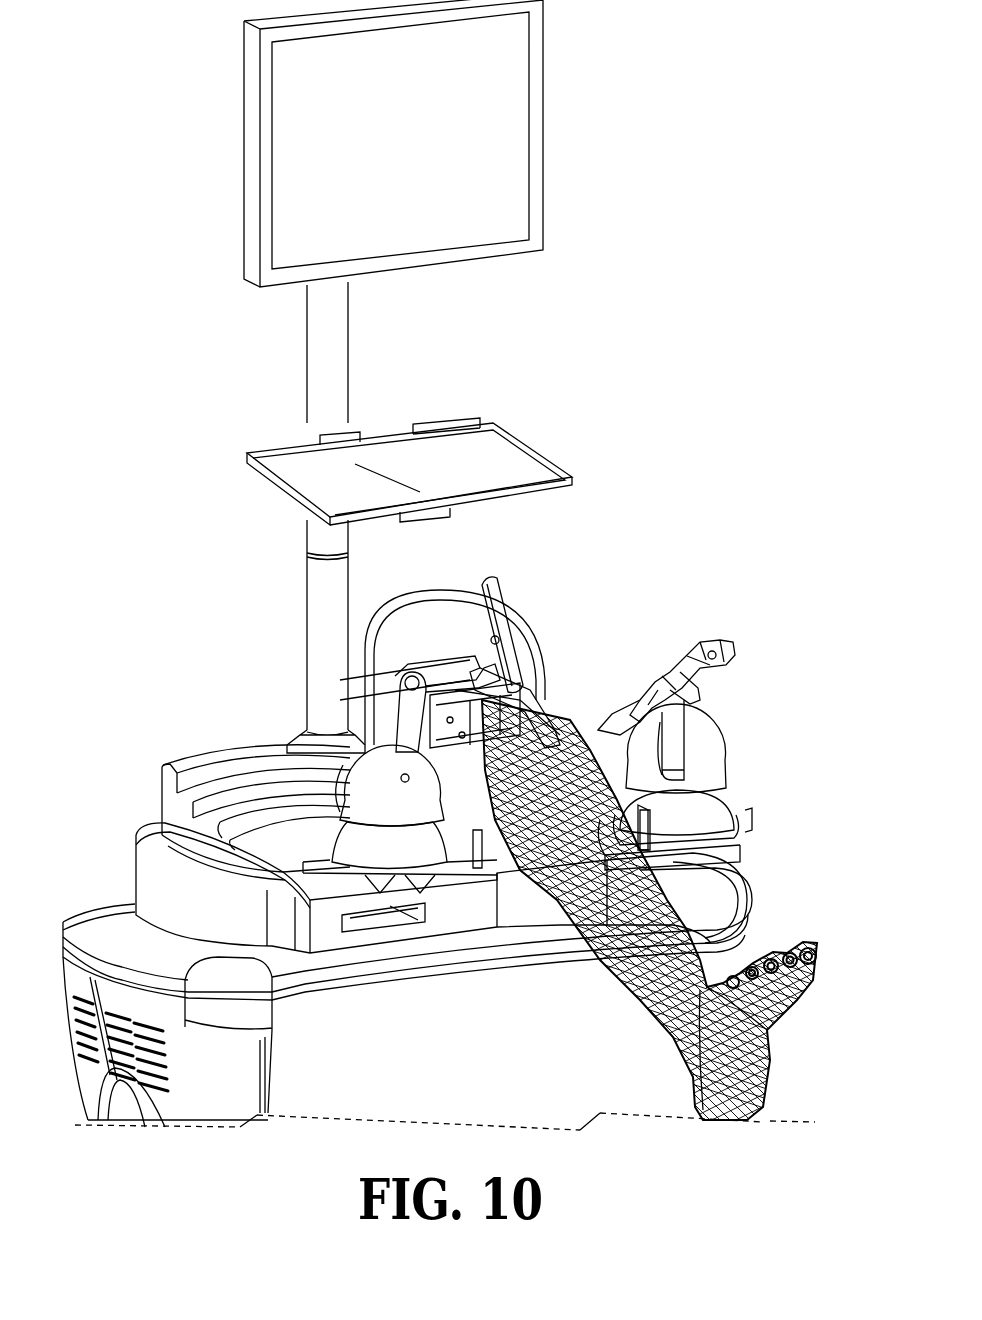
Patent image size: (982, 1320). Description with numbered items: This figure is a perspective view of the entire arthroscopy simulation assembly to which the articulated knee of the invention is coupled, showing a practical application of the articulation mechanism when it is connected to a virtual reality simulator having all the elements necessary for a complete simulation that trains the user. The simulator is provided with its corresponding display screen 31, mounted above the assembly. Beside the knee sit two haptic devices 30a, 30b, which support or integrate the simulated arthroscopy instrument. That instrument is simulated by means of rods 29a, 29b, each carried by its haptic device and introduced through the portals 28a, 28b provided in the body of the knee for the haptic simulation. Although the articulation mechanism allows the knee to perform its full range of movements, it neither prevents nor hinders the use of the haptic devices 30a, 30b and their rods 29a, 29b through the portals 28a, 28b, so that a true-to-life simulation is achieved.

The display screen 31 is at (447, 124).
The haptic device 30a is at (390, 785).
The haptic device 30b is at (712, 758).
The rod 29a is at (420, 668).
The rod 29b is at (593, 730).
The portal 28a is at (452, 722).
The portal 28b is at (572, 723).